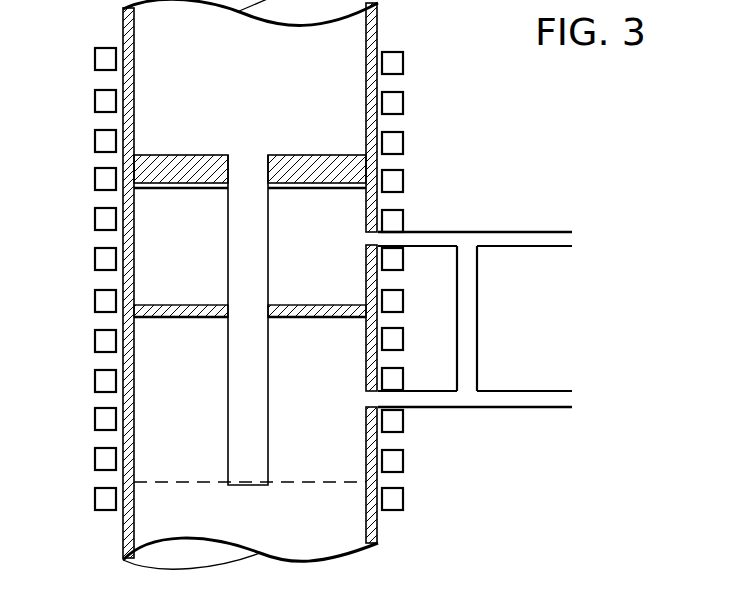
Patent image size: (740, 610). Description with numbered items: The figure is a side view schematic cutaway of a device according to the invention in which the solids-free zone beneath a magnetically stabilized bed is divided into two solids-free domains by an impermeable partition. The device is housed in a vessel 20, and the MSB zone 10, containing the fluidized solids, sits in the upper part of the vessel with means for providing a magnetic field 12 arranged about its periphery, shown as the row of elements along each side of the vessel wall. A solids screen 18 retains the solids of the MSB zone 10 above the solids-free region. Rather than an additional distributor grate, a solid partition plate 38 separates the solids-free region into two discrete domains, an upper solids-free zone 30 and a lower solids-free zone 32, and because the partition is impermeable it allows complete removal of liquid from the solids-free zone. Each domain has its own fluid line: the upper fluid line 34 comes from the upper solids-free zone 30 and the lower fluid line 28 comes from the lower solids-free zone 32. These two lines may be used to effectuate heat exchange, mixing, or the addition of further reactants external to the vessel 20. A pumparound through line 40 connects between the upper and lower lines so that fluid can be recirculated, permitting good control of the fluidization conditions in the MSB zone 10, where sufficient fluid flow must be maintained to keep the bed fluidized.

The MSB zone 10 is at (202, 284).
The means for providing a magnetic field 12 is at (95, 101).
The solids screen 18 is at (197, 483).
The vessel 20 is at (123, 240).
The lower fluid line 28 is at (427, 410).
The upper solids-free zone 30 is at (326, 251).
The lower solids-free zone 32 is at (184, 412).
The upper fluid line 34 is at (436, 232).
The solid partition plate 38 is at (184, 303).
The pumparound line 40 is at (478, 333).